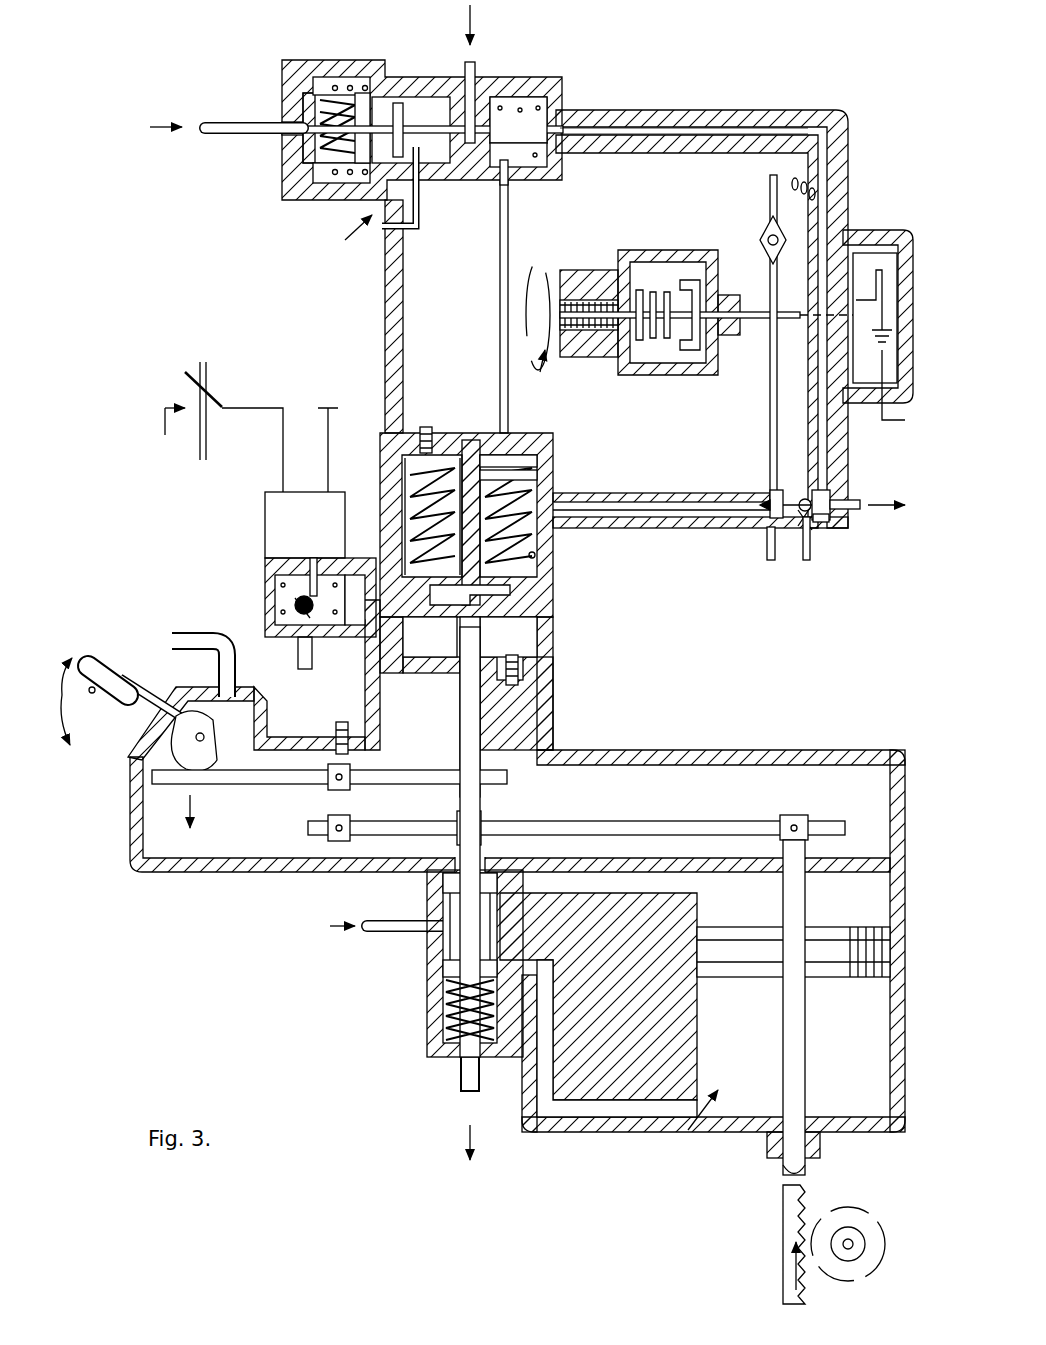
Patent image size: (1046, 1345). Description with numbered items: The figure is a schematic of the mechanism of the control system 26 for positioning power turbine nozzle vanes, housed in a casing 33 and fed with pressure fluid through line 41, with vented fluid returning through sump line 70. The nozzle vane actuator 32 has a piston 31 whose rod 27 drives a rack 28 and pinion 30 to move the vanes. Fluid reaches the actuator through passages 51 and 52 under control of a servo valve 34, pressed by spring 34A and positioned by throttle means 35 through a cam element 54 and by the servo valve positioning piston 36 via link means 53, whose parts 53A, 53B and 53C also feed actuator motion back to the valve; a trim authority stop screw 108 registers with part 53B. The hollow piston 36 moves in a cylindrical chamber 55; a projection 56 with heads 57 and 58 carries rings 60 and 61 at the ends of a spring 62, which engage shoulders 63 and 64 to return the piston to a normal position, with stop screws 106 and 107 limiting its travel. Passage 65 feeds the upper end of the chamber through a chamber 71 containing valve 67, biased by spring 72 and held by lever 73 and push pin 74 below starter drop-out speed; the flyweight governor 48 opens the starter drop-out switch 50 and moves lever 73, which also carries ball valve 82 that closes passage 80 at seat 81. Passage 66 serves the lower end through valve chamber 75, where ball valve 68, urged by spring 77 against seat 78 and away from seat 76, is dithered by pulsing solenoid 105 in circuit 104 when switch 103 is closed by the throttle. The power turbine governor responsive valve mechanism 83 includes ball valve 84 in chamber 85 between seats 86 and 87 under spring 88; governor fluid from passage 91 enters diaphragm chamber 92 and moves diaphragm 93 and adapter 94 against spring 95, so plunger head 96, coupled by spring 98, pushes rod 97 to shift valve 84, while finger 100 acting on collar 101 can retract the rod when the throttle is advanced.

The control system 26 is at (322, 896).
The rod 27 is at (780, 1160).
The rack 28 is at (808, 1195).
The pinion 30 is at (870, 1218).
The piston 31 is at (828, 958).
The nozzle vane actuator 32 is at (695, 1137).
The casing 33 is at (615, 1132).
The servo valve 34 is at (443, 935).
The spring 34A is at (443, 1022).
The throttle means 35 is at (152, 655).
The servo valve positioning piston 36 is at (560, 542).
The fluid pressure line 41 is at (474, 62).
The flyweight governor 48 is at (668, 248).
The gas generator starter drop-out switch 50 is at (850, 300).
The passage 51 is at (648, 880).
The passage 52 is at (553, 1108).
The link means 53 is at (512, 832).
The link part 53A is at (268, 786).
The link part 53B is at (350, 820).
The link part 53C is at (448, 832).
The cam element 54 is at (216, 742).
The cylindrical chamber 55 is at (522, 628).
The projection 56 is at (534, 555).
The head 57 is at (498, 438).
The head 58 is at (450, 604).
The ring 60 is at (402, 490).
The ring 61 is at (535, 560).
The spring 62 is at (540, 490).
The shoulder 63 is at (530, 478).
The shoulder 64 is at (538, 590).
The passage 65 is at (708, 118).
The passage 66 is at (384, 666).
The valve 67 is at (804, 498).
The ball valve 68 is at (300, 620).
The sump line 70 is at (190, 632).
The chamber 71 is at (830, 520).
The spring 72 is at (830, 495).
The lever 73 is at (770, 382).
The push pin 74 is at (812, 530).
The valve chamber 75 is at (280, 608).
The seat 76 is at (320, 570).
The spring 77 is at (275, 588).
The seat 78 is at (345, 628).
The passage 80 is at (652, 498).
The valve seat 81 is at (712, 524).
The ball valve 82 is at (770, 488).
The power turbine governor responsive valve mechanism 83 is at (351, 244).
The ball valve 84 is at (502, 160).
The chamber 85 is at (530, 160).
The valve seat 86 is at (498, 122).
The valve seat 87 is at (563, 112).
The spring 88 is at (520, 160).
The passage 91 is at (228, 122).
The diaphragm chamber 92 is at (290, 158).
The diaphragm 93 is at (308, 90).
The adapter 94 is at (322, 96).
The spring 95 is at (350, 80).
The plunger head 96 is at (356, 182).
The push rod 97 is at (440, 128).
The spring 98 is at (320, 165).
The finger 100 is at (425, 200).
The collar 101 is at (412, 102).
The switch 103 is at (218, 372).
The circuit 104 is at (265, 408).
The pulsing solenoid 105 is at (320, 532).
The adjustable stop screw 106 is at (424, 428).
The stop screw 107 is at (520, 676).
The trim authority stop screw 108 is at (336, 728).